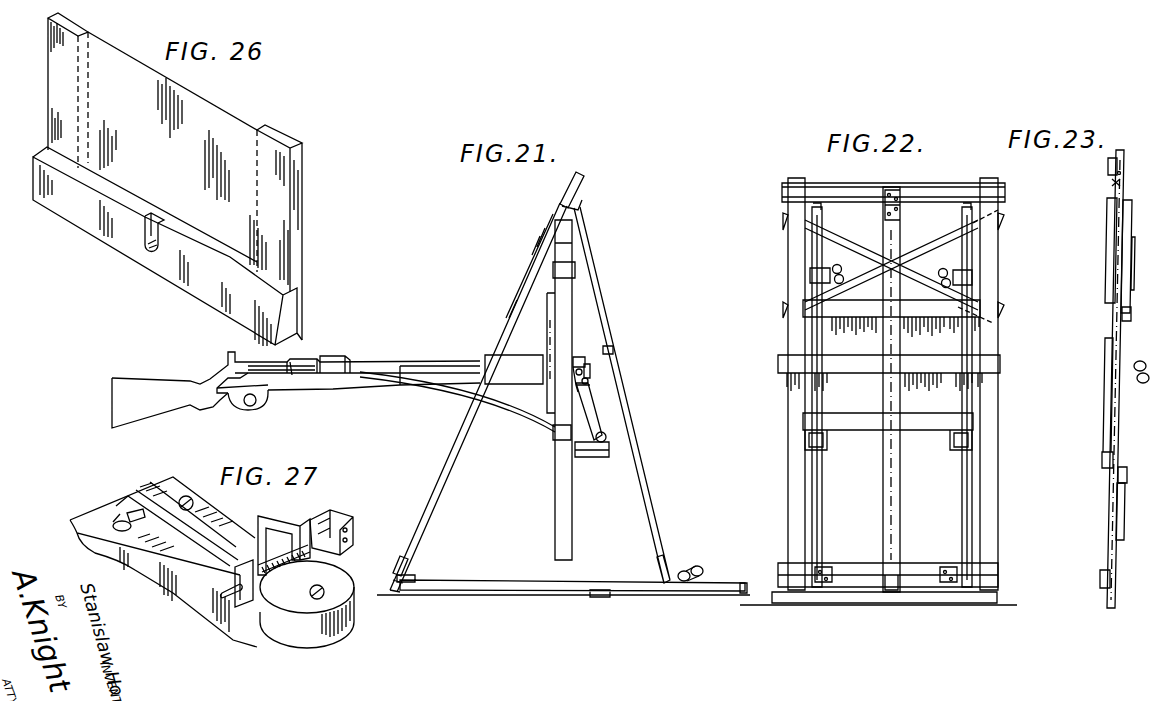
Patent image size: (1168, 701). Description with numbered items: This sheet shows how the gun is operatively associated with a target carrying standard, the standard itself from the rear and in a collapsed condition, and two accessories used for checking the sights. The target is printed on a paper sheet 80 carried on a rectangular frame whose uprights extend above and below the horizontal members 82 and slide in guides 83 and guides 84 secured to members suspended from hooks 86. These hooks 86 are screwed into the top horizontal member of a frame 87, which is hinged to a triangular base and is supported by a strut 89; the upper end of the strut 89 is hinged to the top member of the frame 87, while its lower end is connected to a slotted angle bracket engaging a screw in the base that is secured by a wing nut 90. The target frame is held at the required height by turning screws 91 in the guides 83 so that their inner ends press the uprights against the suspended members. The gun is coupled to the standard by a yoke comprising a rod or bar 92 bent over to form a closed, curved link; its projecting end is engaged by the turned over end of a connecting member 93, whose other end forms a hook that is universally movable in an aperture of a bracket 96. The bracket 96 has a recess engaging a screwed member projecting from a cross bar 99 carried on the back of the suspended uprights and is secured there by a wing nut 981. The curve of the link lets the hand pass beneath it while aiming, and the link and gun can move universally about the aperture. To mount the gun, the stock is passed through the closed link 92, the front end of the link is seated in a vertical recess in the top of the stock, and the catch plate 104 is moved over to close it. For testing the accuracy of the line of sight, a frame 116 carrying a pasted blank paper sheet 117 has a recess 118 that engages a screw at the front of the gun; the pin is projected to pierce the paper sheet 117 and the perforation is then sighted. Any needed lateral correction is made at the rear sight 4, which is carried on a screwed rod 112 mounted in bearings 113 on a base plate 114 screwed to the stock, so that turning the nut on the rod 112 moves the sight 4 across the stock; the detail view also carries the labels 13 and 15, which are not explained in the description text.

In FIG. 27, the rear sight 4 is at (273, 522).
In FIG. 27, the base block 13 is at (327, 563).
In FIG. 27, the clamp jaw 15 is at (343, 530).
In FIG. 21, the paper sheet 80 is at (546, 347).
In FIG. 22, the paper sheet 80 is at (893, 384).
In FIG. 23, the paper sheet 80 is at (1103, 422).
In FIG. 21, the horizontal members 82 is at (558, 302).
In FIG. 22, the horizontal members 82 is at (943, 312).
In FIG. 21, the guides 83 is at (570, 272).
In FIG. 22, the guides 83 is at (810, 276).
In FIG. 23, the guides 83 is at (1130, 316).
In FIG. 22, the guides 84 is at (805, 438).
In FIG. 23, the guides 84 is at (1127, 475).
In FIG. 21, the hooks 86 is at (560, 206).
In FIG. 22, the hooks 86 is at (818, 204).
In FIG. 23, the hooks 86 is at (1112, 183).
In FIG. 22, the frame 87 is at (1000, 193).
In FIG. 23, the frame 87 is at (1108, 168).
In FIG. 21, the strut 89 is at (612, 352).
In FIG. 21, the wing nut 90 is at (698, 566).
In FIG. 22, the screws 91 is at (834, 266).
In FIG. 21, the rod or bar 92 is at (457, 393).
In FIG. 21, the connecting member 93 is at (592, 407).
In FIG. 22, the bracket 96 is at (778, 368).
In FIG. 21, the cross bar 99 is at (580, 352).
In FIG. 22, the cross bar 99 is at (933, 367).
In FIG. 21, the plate 104 is at (300, 362).
In FIG. 27, the screwed rod 112 is at (270, 576).
In FIG. 27, the bearings 113 is at (242, 627).
In FIG. 27, the base plate 114 is at (293, 600).
In FIG. 26, the frame 116 is at (290, 320).
In FIG. 26, the blank paper sheet 117 is at (212, 120).
In FIG. 26, the recess 118 is at (145, 240).
In FIG. 21, the wing nut 981 is at (590, 372).